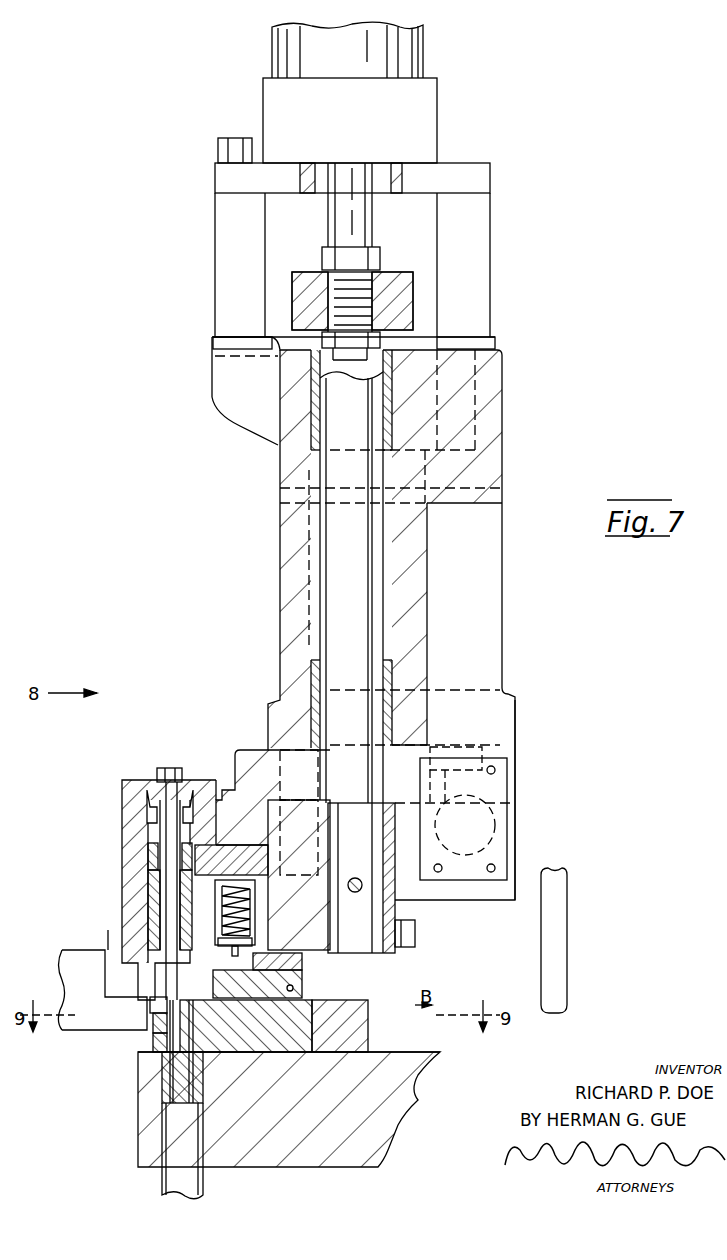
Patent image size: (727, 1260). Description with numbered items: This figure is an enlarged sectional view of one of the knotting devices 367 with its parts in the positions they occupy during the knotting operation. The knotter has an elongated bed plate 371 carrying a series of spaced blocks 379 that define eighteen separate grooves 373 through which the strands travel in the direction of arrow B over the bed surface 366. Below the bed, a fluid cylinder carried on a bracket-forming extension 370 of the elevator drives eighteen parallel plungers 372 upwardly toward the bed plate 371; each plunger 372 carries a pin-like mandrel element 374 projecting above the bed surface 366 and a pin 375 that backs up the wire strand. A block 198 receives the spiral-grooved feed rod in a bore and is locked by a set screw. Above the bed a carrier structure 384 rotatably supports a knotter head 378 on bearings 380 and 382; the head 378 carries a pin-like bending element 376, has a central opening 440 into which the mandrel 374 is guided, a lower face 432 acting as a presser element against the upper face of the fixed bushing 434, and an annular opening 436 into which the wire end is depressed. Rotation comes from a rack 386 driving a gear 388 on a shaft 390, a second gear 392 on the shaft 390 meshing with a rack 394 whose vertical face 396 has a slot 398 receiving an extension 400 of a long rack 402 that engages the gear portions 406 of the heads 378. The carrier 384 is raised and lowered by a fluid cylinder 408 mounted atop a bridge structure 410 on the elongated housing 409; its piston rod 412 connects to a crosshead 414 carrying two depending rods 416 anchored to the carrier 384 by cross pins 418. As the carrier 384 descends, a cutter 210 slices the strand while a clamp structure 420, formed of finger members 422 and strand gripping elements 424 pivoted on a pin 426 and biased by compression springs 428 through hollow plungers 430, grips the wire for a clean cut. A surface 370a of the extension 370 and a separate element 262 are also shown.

The fluid cylinder 408 is at (425, 52).
The bridge structure 410 is at (215, 220).
The piston rod 412 is at (373, 220).
The crosshead 414 is at (408, 297).
The elongated housing 409 is at (490, 523).
The assembly 367 is at (183, 556).
The depending rods 416 is at (335, 578).
The second gear 392 is at (280, 742).
The carrier structure 384 is at (232, 760).
The shaft 390 is at (440, 745).
The gear 388 is at (515, 733).
The rack 386 is at (507, 820).
The bearing 382 is at (148, 812).
The vertical face 396 is at (280, 817).
The slot 398 is at (330, 833).
The rack 394 is at (330, 835).
The gear portions 406 is at (147, 855).
The long rack 402 is at (275, 860).
The rotary head 378 is at (160, 890).
The extension 400 is at (272, 870).
The bearing 380 is at (150, 925).
The compression spring 428 is at (240, 920).
The central opening 440 is at (170, 965).
The hollow plunger 430 is at (265, 940).
The cross pins 418 is at (352, 893).
The cutter 210 is at (150, 982).
The strand gripping elements 424 is at (300, 963).
The clamp structure 420 is at (305, 978).
The pin 426 is at (302, 988).
The bed surface 366 is at (360, 1000).
The lower face 432 is at (150, 1003).
The bed plate 371 is at (368, 1020).
The surface 370a is at (368, 1040).
The block 198 is at (80, 1032).
The annular opening 436 is at (153, 1025).
The bending element 376 is at (210, 1010).
The finger members 422 is at (250, 1012).
The fixed bushing 434 is at (158, 1050).
The grooves 373 is at (290, 1052).
The spaced blocks 379 is at (312, 1052).
The pin 375 is at (205, 1070).
The mandrel element 374 is at (162, 1080).
The bracket-forming extension 370 is at (392, 1122).
The plungers 372 is at (165, 1135).
The pin 262 is at (562, 964).